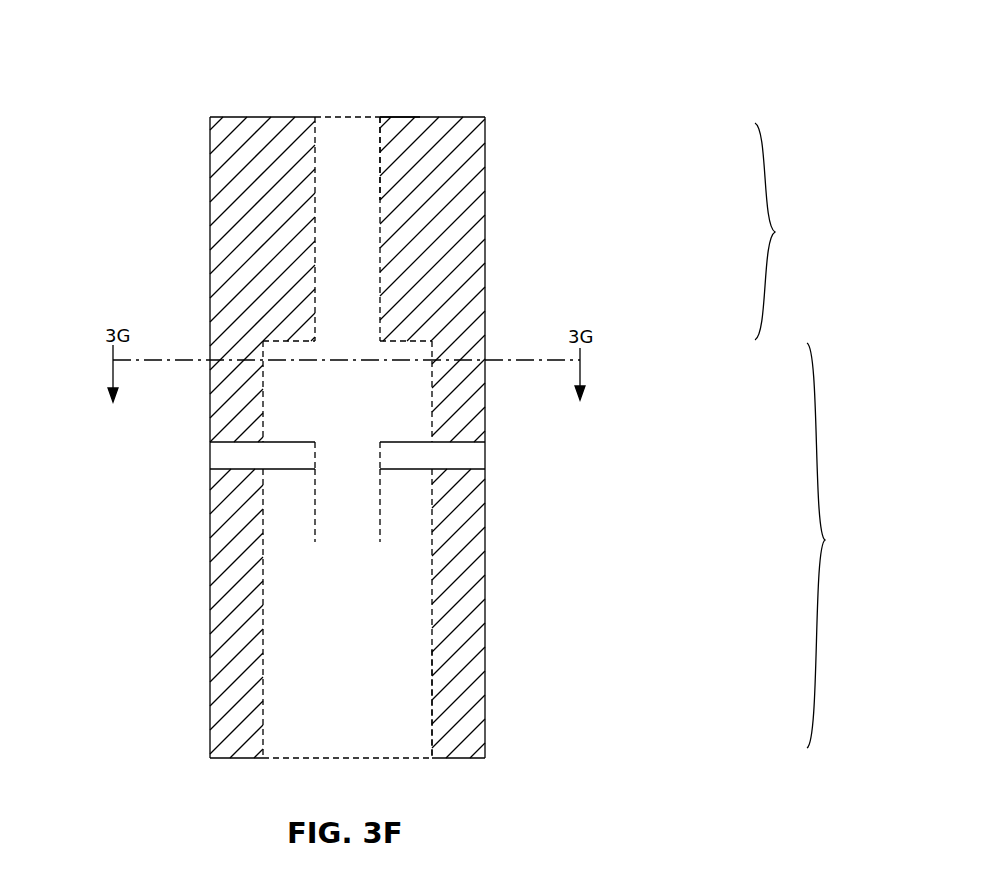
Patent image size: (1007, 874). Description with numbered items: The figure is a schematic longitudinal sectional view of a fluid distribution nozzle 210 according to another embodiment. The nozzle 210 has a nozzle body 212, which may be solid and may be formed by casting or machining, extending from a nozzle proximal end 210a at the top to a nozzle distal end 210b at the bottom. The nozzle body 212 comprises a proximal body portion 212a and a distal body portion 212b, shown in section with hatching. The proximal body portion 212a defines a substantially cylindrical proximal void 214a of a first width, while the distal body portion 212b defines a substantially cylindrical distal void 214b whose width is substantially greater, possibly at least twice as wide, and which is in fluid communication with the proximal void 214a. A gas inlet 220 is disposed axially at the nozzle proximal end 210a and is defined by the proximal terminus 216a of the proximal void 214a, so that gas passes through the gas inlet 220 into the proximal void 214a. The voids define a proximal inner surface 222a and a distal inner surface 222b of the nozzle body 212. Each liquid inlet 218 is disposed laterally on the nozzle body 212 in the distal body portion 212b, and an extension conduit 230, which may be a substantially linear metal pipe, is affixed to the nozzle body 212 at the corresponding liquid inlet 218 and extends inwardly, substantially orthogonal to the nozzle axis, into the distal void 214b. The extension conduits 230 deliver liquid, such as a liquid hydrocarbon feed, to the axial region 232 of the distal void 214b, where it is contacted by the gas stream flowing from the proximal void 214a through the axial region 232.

The fluid distribution nozzle 210 is at (495, 53).
The nozzle proximal end 210a is at (197, 120).
The nozzle distal end 210b is at (192, 759).
The nozzle body 212 is at (495, 327).
The proximal body portion 212a is at (208, 225).
The distal body portion 212b is at (208, 507).
The proximal void 214a is at (347, 229).
The distal void 214b is at (347, 613).
The proximal terminus 216a is at (380, 118).
The liquid inlet 218 is at (203, 457).
The gas inlet 220 is at (332, 118).
The proximal inner surface 222a is at (378, 160).
The distal inner surface 222b is at (430, 733).
The extension conduit 230 is at (390, 437).
The axial region 232 is at (347, 505).